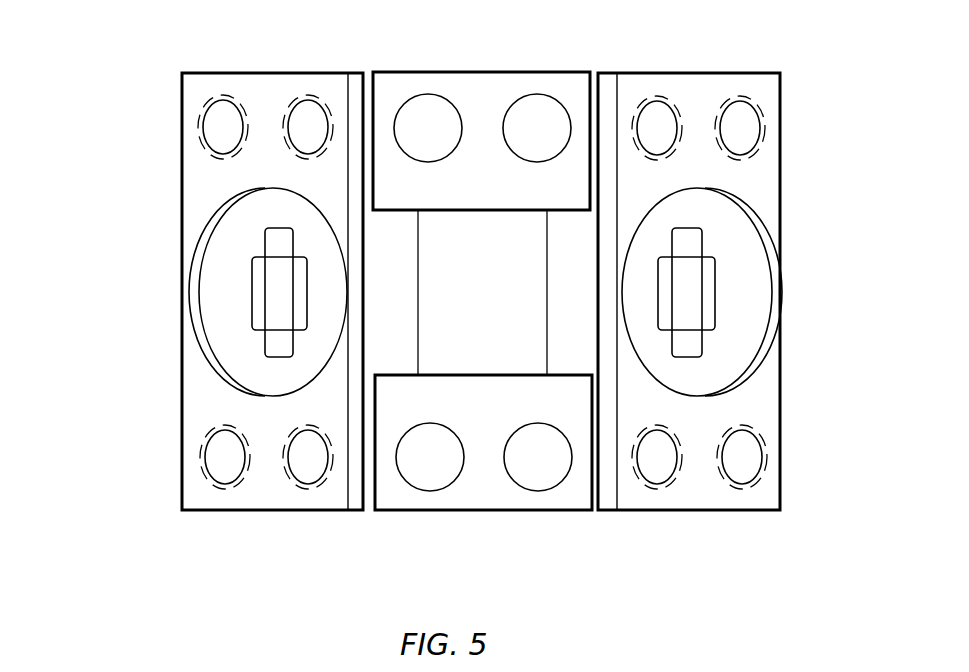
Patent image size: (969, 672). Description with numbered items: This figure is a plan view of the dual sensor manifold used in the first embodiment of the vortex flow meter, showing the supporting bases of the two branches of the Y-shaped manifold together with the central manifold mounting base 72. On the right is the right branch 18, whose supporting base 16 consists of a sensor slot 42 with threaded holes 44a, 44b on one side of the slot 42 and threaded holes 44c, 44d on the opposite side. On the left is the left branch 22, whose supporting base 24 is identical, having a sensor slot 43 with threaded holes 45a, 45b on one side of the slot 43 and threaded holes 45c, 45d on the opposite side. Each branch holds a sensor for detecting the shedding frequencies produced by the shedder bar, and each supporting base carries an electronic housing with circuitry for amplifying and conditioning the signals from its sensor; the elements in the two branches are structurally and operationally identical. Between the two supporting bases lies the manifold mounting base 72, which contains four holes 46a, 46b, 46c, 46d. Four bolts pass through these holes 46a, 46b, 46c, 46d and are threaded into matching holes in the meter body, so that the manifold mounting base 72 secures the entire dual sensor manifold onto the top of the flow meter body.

The supporting base 16 is at (780, 385).
The right branch 18 is at (875, 105).
The left branch 22 is at (88, 105).
The supporting base 24 is at (182, 385).
The sensor slot 42 is at (740, 292).
The sensor slot 43 is at (228, 292).
The threaded hole 44a is at (665, 100).
The threaded hole 44b is at (768, 128).
The threaded hole 44c is at (667, 485).
The threaded hole 44d is at (768, 452).
The threaded hole 45a is at (195, 128).
The threaded hole 45b is at (292, 100).
The threaded hole 45c is at (196, 452).
The threaded hole 45d is at (296, 482).
The hole 46a is at (422, 490).
The hole 46b is at (548, 490).
The hole 46c is at (418, 96).
The hole 46d is at (548, 96).
The manifold mounting base 72 is at (483, 100).